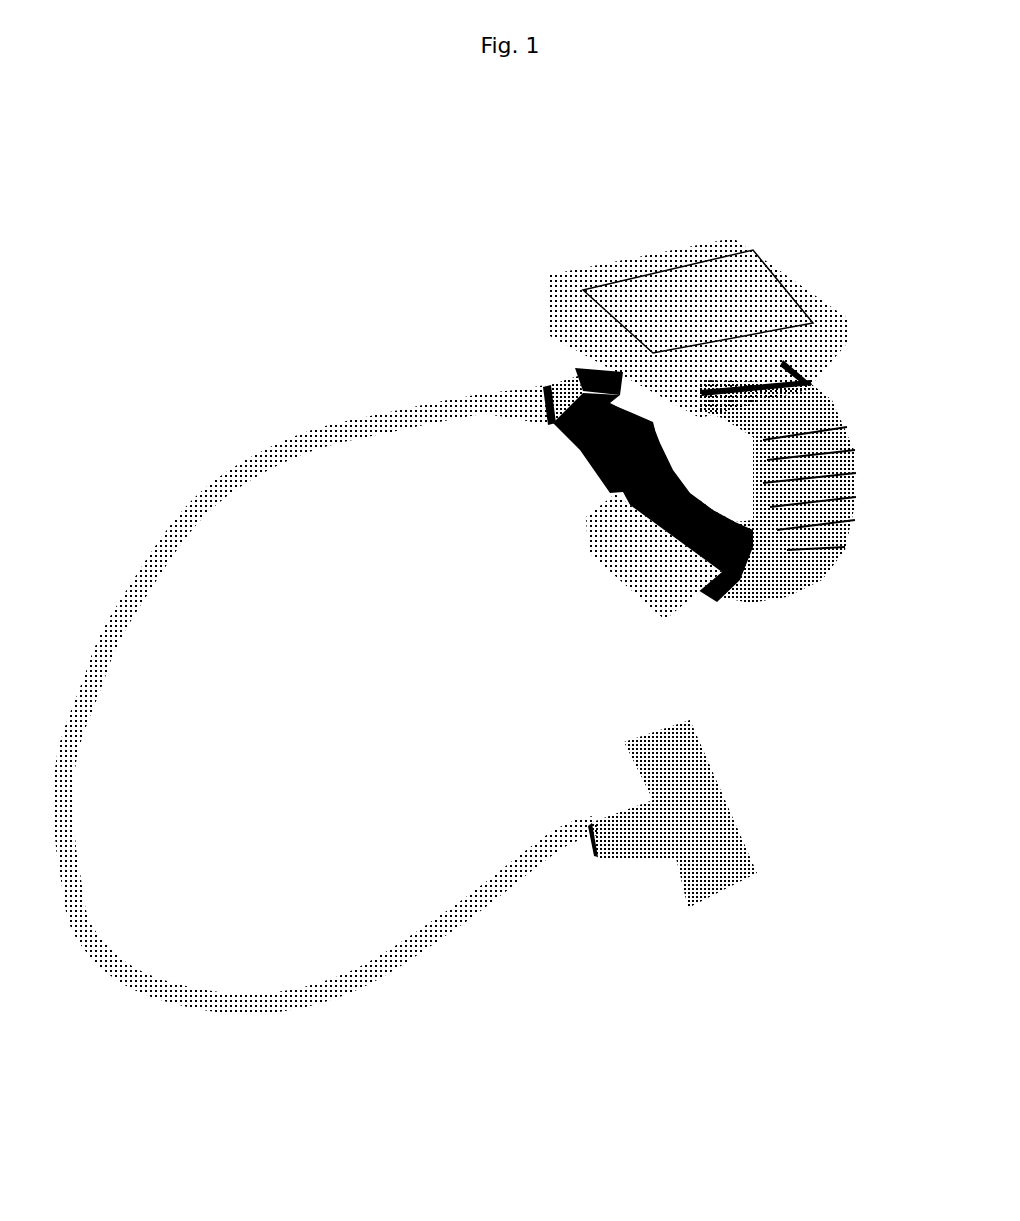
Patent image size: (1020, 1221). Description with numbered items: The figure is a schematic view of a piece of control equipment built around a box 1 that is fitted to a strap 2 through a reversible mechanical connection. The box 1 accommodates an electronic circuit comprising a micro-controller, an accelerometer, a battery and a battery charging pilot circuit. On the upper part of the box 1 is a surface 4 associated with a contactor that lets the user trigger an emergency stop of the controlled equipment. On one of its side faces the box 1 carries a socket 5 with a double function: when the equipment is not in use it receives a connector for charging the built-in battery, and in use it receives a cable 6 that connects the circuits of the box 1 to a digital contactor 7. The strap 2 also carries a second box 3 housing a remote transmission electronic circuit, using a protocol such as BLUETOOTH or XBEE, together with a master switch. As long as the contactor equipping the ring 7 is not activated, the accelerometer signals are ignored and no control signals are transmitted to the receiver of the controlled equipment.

The box 1 is at (659, 315).
The strap 2 is at (798, 573).
The second box 3 is at (612, 560).
The surface 4 is at (683, 302).
The socket 5 is at (605, 403).
The cable 6 is at (320, 447).
The digital contactor 7 is at (666, 870).